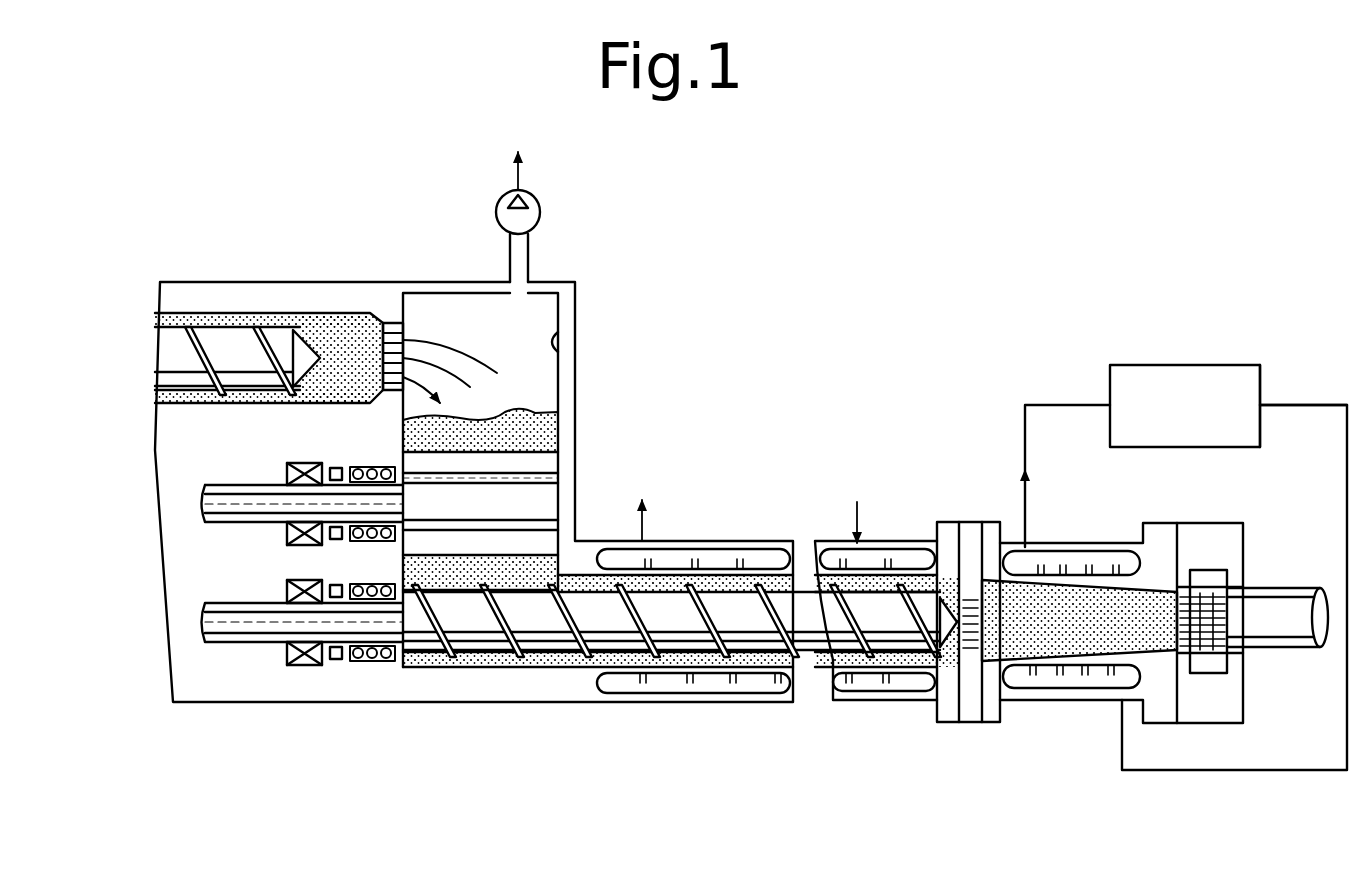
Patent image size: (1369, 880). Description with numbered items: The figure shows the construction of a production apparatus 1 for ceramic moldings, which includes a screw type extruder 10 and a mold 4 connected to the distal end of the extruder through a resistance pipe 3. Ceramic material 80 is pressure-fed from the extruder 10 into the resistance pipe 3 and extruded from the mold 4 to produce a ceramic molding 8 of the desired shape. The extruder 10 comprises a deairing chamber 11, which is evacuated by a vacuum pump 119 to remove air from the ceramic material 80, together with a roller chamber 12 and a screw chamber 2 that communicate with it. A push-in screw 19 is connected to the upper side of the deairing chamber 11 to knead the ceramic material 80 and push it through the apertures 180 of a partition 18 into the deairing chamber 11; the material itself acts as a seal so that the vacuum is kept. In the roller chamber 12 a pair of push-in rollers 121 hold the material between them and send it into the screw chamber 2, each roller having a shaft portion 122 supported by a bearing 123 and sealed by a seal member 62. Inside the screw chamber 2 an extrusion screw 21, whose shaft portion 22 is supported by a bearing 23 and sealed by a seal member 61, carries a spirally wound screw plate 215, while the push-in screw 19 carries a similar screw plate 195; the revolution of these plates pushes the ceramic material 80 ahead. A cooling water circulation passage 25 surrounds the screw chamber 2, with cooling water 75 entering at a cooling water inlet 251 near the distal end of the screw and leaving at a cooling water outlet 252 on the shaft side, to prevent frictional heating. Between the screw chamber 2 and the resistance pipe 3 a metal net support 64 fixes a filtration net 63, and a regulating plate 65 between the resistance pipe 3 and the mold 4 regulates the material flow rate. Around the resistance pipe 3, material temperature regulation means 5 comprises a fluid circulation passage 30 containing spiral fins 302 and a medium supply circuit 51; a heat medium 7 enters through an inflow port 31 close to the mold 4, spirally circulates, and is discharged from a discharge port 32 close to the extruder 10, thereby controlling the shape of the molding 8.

The production apparatus 1 is at (993, 280).
The screw chamber 2 is at (622, 663).
The resistance pipe 3 is at (1037, 695).
The mold 4 is at (1213, 675).
The material temperature regulation means 5 is at (1170, 352).
The heat medium 7 is at (1020, 543).
The ceramic molding 8 is at (1283, 632).
The screw type extruder 10 is at (673, 362).
The deairing chamber 11 is at (560, 326).
The roller chamber 12 is at (550, 470).
The partition 18 is at (392, 303).
The push-in screw 19 is at (165, 357).
The extrusion screw 21 is at (697, 637).
The shaft portion 22 is at (240, 625).
The bearing 23 is at (300, 665).
The cooling water circulation passage 25 is at (762, 548).
The fluid circulation passage 30 is at (1050, 547).
The inflow port 31 is at (1120, 695).
The discharge port 32 is at (1020, 545).
The medium supply circuit 51 is at (1260, 380).
The seal member 61 is at (368, 468).
The seal member 62 is at (335, 466).
The filtration net 63 is at (950, 655).
The metal net support 64 is at (963, 723).
The regulating plate 65 is at (1183, 672).
The cooling water 75 is at (645, 527).
The ceramic material 80 is at (322, 318).
The vacuum pump 119 is at (530, 215).
The push-in roller 121 is at (455, 510).
The shaft portion 122 is at (237, 520).
The bearing 123 is at (285, 473).
The apertures 180 is at (367, 313).
The screw plate 195 is at (189, 318).
The screw plate 215 is at (493, 627).
The cooling water inlet 251 is at (860, 543).
The cooling water outlet 252 is at (637, 540).
The fins 302 is at (1045, 547).